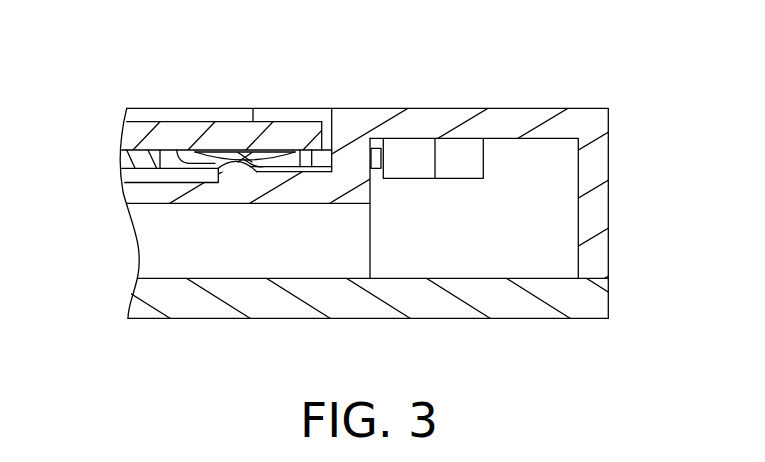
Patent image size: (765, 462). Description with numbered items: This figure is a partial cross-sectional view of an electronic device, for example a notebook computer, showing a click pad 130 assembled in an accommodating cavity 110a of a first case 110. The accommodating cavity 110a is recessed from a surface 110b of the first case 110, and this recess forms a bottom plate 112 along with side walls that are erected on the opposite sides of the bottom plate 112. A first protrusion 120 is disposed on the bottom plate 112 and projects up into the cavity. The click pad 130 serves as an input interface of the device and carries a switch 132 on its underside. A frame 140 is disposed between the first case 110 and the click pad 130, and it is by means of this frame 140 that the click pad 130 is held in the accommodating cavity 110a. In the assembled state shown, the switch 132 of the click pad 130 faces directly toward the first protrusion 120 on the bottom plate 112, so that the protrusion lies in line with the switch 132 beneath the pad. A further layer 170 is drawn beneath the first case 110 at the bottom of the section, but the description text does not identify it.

The first case 110 is at (597, 198).
The accommodating cavity 110a is at (328, 117).
The surface 110b is at (447, 108).
The bottom plate 112 is at (130, 195).
The first protrusion 120 is at (228, 177).
The click pad 130 is at (147, 127).
The switch 132 is at (245, 155).
The frame 140 is at (128, 162).
The base plate 170 is at (597, 303).